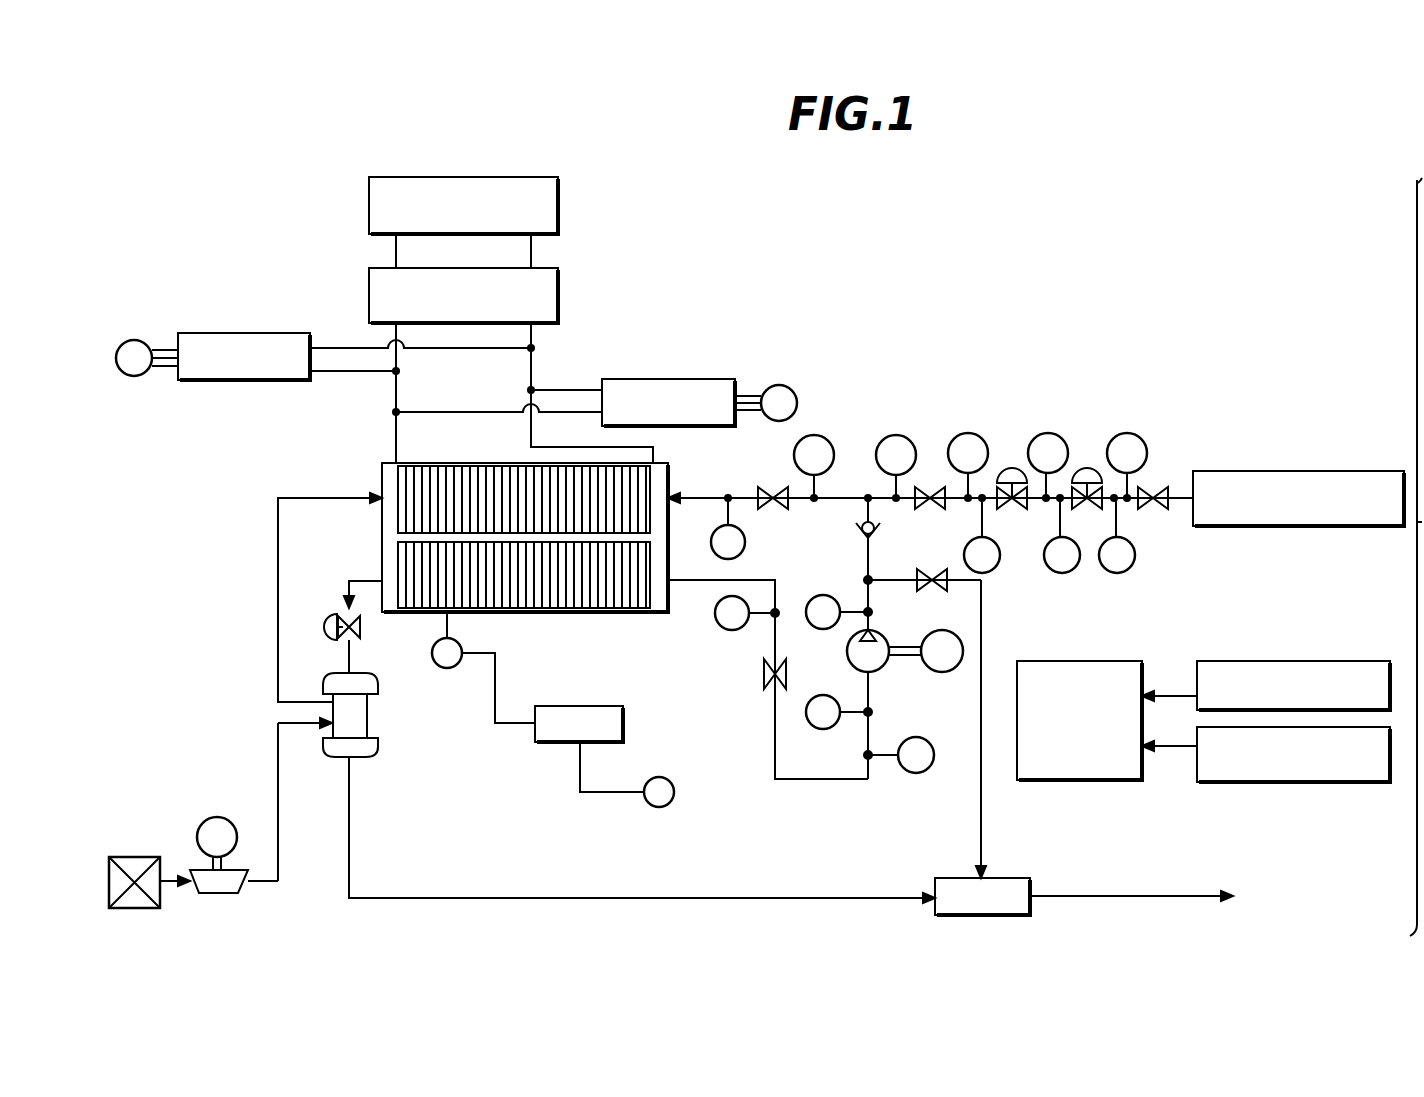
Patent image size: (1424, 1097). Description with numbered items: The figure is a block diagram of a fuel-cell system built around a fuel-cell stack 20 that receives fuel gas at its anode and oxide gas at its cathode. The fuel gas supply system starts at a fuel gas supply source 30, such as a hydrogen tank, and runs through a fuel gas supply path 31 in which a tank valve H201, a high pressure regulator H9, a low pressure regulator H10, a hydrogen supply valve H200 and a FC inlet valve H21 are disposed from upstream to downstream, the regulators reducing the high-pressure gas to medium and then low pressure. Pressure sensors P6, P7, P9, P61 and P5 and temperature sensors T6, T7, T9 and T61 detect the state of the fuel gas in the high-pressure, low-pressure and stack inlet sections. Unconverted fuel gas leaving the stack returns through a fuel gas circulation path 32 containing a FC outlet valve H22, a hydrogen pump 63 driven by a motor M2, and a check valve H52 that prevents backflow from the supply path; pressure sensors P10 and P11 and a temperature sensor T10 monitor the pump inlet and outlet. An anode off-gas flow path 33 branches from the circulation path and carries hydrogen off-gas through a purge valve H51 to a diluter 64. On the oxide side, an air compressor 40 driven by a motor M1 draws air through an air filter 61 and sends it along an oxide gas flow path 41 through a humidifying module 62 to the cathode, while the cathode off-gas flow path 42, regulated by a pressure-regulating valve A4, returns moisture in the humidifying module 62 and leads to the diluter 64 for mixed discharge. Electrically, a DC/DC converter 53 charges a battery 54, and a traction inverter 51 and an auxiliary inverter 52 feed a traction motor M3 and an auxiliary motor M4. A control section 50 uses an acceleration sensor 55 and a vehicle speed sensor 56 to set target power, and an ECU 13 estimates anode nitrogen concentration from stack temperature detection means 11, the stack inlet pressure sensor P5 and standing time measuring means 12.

The battery (secondary battery) 54 is at (561, 210).
The DC/DC converter 53 is at (561, 298).
The auxiliary inverter 52 is at (248, 332).
The traction inverter 51 is at (665, 378).
The auxiliary motor M4 is at (147, 358).
The traction motor M3 is at (766, 403).
The fuel-cell stack 20 is at (565, 612).
The oxide gas flow path 41 is at (346, 497).
The cathode off-gas flow path 42 is at (368, 580).
The pressure-regulating valve A4 is at (360, 640).
The humidifying module 62 is at (368, 712).
The air filter 61 is at (135, 857).
The air compressor 40 is at (225, 895).
The motor M1 is at (217, 843).
The stack temperature detection means 11 is at (445, 668).
The ECU 13 is at (552, 742).
The standing time measuring means 12 is at (659, 808).
The fuel gas supply path 31 is at (843, 497).
The pressure sensor P5 is at (728, 528).
The FC inlet valve H21 is at (778, 509).
The temperature sensor T61 is at (814, 466).
The pressure sensor P61 is at (896, 466).
The hydrogen supply valve H200 is at (935, 509).
The pressure sensor P9 is at (968, 465).
The temperature sensor T9 is at (982, 535).
The low pressure regulator H10 is at (1012, 512).
The pressure sensor P7 is at (1048, 465).
The temperature sensor T7 is at (1062, 535).
The high pressure regulator H9 is at (1087, 512).
The temperature sensor T6 is at (1117, 535).
The pressure sensor P6 is at (1127, 465).
The tank valve H201 is at (1155, 509).
The fuel gas supply source 30 is at (1275, 470).
The check valve H52 is at (858, 538).
The fuel gas circulation path 32 is at (775, 740).
The FC outlet valve H22 is at (762, 678).
The pressure sensor P11 is at (839, 612).
The pressure sensor P10 is at (839, 712).
The temperature sensor T10 is at (899, 755).
The hydrogen pump 63 is at (886, 668).
The motor M2 is at (942, 651).
The purge valve H51 is at (935, 591).
The anode off-gas flow path 33 is at (984, 644).
The diluter 64 is at (1032, 888).
The control section 50 is at (1108, 660).
The acceleration sensor 55 is at (1265, 660).
The vehicle speed sensor 56 is at (1253, 782).